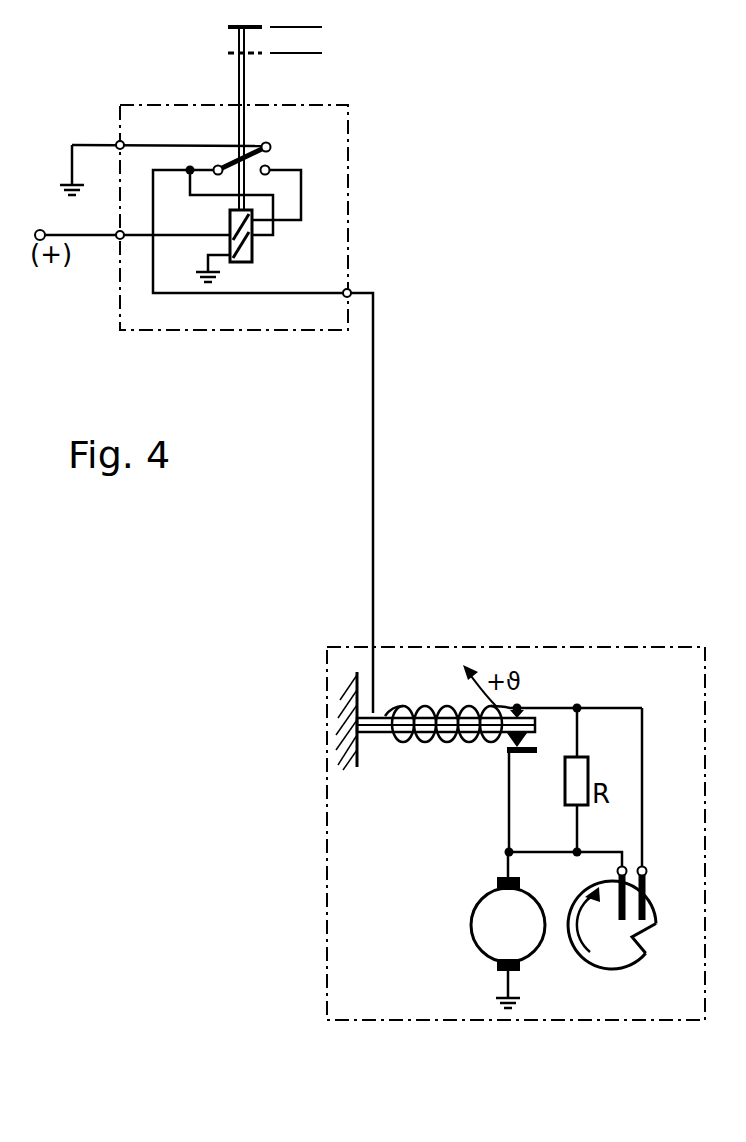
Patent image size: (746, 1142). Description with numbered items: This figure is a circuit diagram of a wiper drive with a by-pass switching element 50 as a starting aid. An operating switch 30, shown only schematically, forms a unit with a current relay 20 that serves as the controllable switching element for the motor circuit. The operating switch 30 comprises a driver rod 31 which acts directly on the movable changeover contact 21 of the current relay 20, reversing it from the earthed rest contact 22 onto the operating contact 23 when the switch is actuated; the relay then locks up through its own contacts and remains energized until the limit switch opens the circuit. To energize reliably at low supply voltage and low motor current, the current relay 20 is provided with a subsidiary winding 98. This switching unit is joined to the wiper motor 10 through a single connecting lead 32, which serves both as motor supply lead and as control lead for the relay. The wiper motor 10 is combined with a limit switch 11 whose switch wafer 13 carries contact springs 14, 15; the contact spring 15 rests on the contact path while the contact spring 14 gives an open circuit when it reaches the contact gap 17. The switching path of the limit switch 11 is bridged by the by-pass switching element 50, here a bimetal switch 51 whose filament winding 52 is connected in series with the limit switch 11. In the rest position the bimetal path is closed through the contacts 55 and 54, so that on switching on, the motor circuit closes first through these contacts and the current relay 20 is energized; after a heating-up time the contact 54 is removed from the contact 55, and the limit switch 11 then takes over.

The operating switch 30 is at (362, 40).
The driver rod 31 is at (238, 80).
The movable changeover contact 21 is at (240, 164).
The rest contact 22 is at (268, 143).
The operating contact 23 is at (268, 166).
The current relay 20 is at (254, 245).
The subsidiary winding 98 is at (241, 263).
The connecting lead 32 is at (374, 479).
The by-pass switching element 50 is at (545, 695).
The bimetal switch 51 is at (378, 733).
The filament winding 52 is at (462, 745).
The contact 54 is at (536, 736).
The contact 55 is at (525, 755).
The wiper motor 10 is at (471, 926).
The limit switch 11 is at (627, 973).
The switch wafer 13 is at (600, 960).
The contact spring 14 is at (611, 892).
The contact spring 15 is at (648, 882).
The contact gap 17 is at (648, 944).